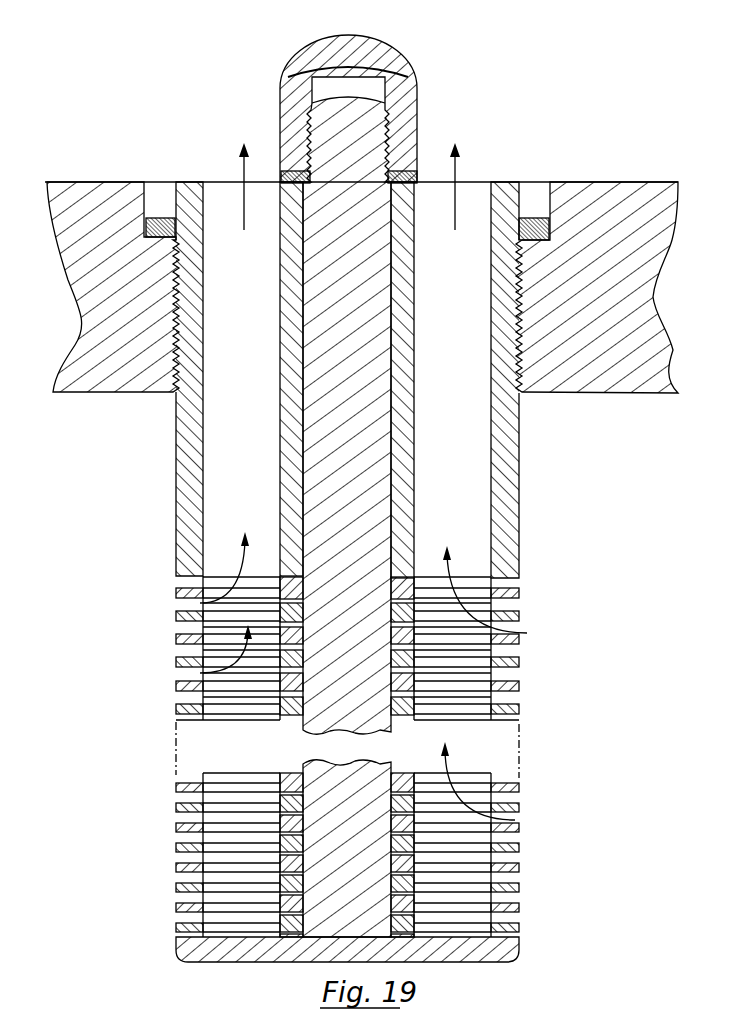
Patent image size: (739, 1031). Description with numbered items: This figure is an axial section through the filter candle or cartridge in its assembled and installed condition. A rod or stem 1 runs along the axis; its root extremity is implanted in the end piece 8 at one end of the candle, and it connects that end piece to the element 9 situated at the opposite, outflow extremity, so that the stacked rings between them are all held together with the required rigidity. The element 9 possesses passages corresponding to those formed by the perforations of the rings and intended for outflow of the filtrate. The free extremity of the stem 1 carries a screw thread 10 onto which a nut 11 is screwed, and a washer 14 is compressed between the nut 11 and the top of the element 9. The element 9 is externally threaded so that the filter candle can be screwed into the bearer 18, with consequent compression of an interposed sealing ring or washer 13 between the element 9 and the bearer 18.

The rod or stem 1 is at (312, 467).
The end piece 8 is at (326, 942).
The element 9 is at (510, 462).
The screw thread 10 is at (376, 131).
The nut 11 is at (291, 67).
The sealing ring or washer 13 is at (158, 214).
The washer 14 is at (311, 177).
The bearer 18 is at (594, 187).